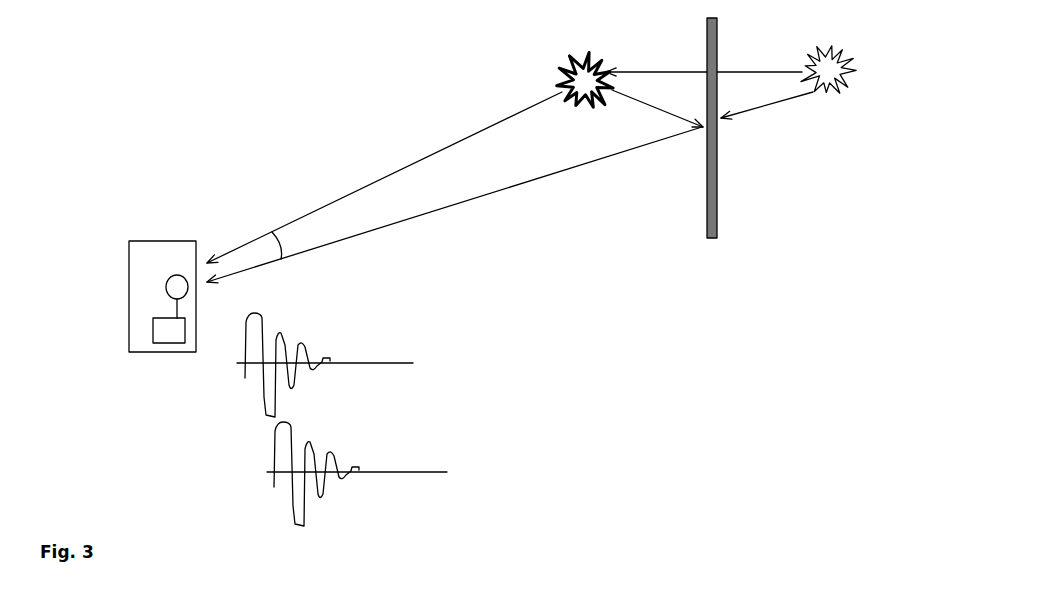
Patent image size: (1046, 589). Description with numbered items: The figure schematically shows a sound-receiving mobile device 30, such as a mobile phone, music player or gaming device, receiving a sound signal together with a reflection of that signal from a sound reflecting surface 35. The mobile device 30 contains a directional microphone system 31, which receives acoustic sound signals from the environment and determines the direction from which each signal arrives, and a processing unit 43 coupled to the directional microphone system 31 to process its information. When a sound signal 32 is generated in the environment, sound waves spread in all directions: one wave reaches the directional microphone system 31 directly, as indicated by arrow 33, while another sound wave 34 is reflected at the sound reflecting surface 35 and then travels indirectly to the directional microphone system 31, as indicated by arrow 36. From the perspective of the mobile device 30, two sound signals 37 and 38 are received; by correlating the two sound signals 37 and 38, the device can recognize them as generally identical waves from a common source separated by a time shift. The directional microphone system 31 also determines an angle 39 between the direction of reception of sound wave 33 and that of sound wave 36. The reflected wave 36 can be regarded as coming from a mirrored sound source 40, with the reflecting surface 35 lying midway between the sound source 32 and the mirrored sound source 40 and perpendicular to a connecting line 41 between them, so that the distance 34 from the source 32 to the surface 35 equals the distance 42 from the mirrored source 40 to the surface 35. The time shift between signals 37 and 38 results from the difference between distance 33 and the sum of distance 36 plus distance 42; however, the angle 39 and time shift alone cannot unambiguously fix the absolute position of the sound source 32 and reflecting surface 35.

The mobile device 30 is at (152, 241).
The directional microphone system 31 is at (166, 285).
The sound signal 32 is at (562, 60).
The arrow 33 is at (382, 180).
The sound wave 34 is at (640, 105).
The sound reflecting surface 35 is at (715, 202).
The arrow 36 is at (483, 196).
The sound signal 37 is at (263, 320).
The sound signal 38 is at (295, 427).
The angle 39 is at (255, 253).
The mirrored sound source 40 is at (832, 93).
The connecting line 41 is at (665, 70).
The distance 42 is at (763, 107).
The processing unit 43 is at (153, 332).